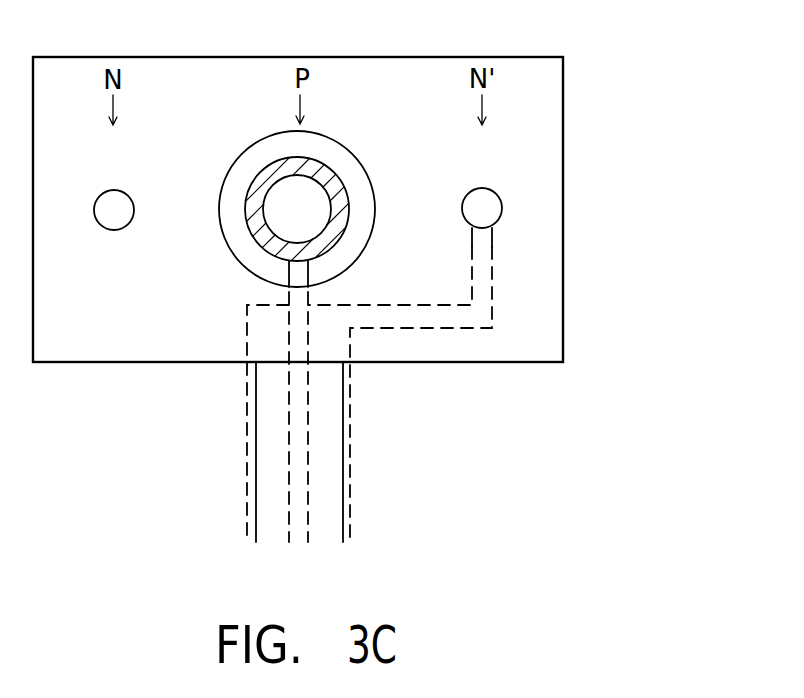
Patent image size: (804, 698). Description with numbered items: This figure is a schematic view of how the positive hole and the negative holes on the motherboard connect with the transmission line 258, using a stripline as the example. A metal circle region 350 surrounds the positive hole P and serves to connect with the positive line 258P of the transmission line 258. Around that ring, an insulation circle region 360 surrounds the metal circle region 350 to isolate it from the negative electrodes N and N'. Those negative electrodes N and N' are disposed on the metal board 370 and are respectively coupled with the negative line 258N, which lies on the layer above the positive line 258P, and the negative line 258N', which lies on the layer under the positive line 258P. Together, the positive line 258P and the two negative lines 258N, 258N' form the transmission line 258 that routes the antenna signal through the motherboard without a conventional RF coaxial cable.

The metal board 370 is at (541, 129).
The insulation circle region 360 is at (262, 157).
The metal circle region 350 is at (338, 189).
The positive line 258P is at (308, 296).
The negative line 258N is at (405, 365).
The negative line 258N' is at (193, 423).
The transmission line 258 is at (358, 478).